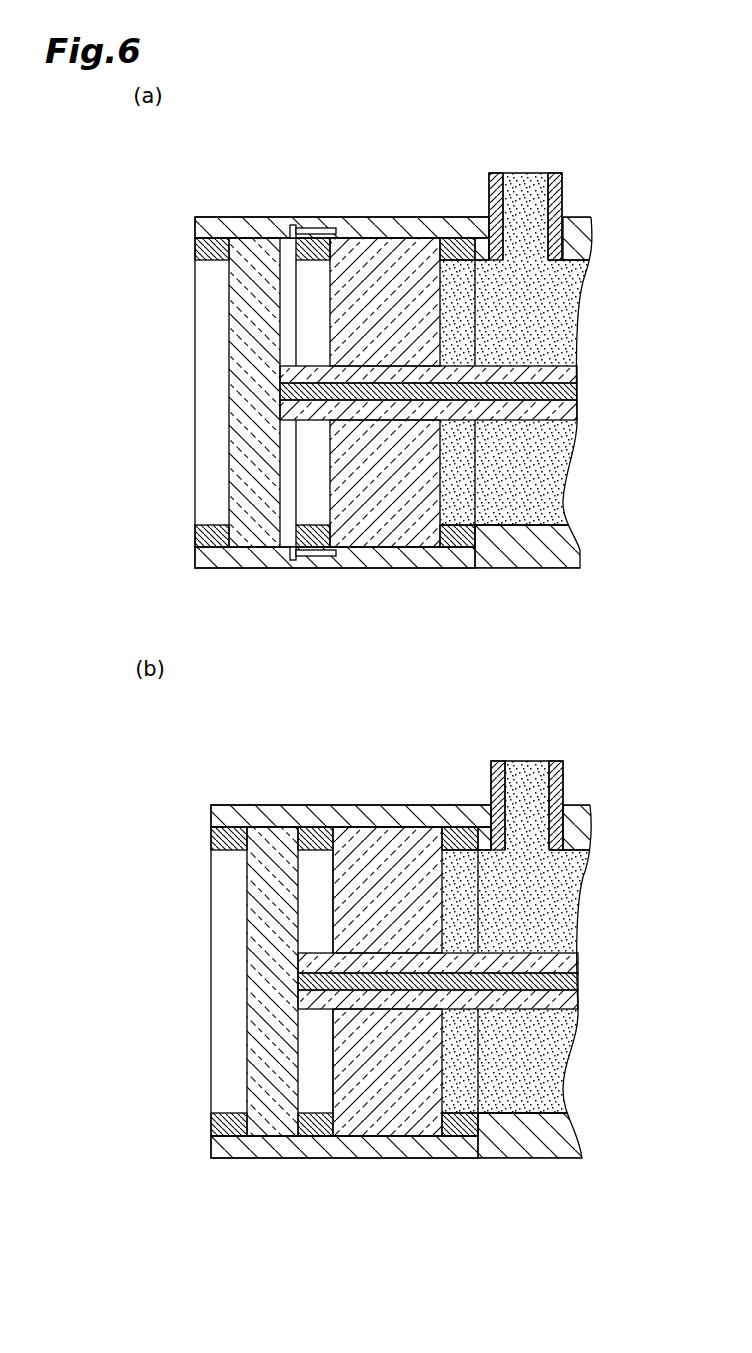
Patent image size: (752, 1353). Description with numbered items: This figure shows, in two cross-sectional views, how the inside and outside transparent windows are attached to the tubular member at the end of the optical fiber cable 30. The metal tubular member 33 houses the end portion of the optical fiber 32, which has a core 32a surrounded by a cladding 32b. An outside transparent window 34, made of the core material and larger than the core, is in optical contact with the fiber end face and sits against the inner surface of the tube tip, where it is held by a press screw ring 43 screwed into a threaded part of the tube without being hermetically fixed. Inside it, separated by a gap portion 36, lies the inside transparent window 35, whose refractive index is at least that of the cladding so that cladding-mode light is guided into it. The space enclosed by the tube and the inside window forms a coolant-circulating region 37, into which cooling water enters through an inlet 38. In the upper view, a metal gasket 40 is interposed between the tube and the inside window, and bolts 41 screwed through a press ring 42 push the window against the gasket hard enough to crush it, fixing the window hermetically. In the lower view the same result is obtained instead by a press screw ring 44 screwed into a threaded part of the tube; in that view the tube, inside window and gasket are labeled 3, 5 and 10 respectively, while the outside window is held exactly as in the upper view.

The optical fiber cable 30 is at (276, 139).
The tubular member 33 is at (421, 221).
The plate member 3 is at (421, 808).
The inlet 38 is at (538, 204).
The coolant-circulating region 37 is at (566, 309).
The metal gasket 40 is at (458, 253).
The sealing block 10 is at (456, 849).
The press screw ring 43 is at (208, 250).
The outside transparent window 34 is at (240, 438).
The gap portion 36 is at (306, 285).
The bolts 41 is at (318, 236).
The press ring 42 is at (333, 549).
The press screw ring 44 is at (313, 1129).
The inside transparent window 35 is at (381, 254).
The core member 5 is at (384, 843).
The optical fiber 32 is at (471, 696).
The core 32a is at (577, 393).
The cladding 32b is at (568, 409).